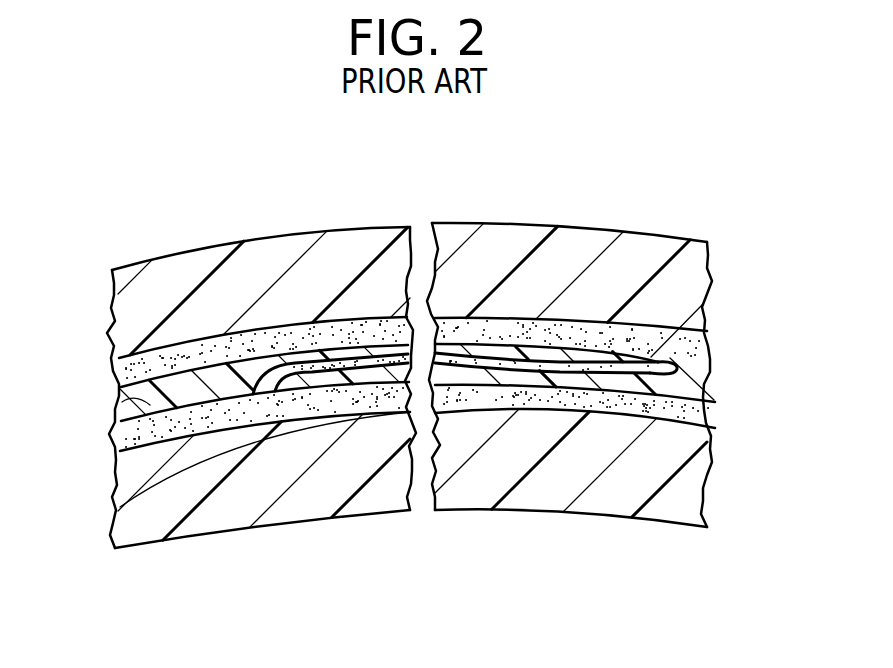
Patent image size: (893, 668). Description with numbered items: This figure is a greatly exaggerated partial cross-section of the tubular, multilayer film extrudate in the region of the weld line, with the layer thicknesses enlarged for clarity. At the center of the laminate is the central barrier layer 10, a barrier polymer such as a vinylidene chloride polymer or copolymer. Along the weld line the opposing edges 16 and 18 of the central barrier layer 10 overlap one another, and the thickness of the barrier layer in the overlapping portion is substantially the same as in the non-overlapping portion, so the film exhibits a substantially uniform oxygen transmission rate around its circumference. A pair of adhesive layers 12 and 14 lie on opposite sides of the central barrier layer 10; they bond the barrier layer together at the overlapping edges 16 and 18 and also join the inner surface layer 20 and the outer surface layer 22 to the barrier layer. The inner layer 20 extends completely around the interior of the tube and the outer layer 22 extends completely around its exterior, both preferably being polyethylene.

The central barrier layer 10 is at (120, 408).
The adhesive layer 12 is at (128, 434).
The adhesive layer 14 is at (117, 360).
The opposing edge of the central barrier layer 16 is at (121, 494).
The opposing edge of the central barrier layer 18 is at (687, 338).
The inner surface layer 20 is at (523, 513).
The outer surface layer 22 is at (642, 233).